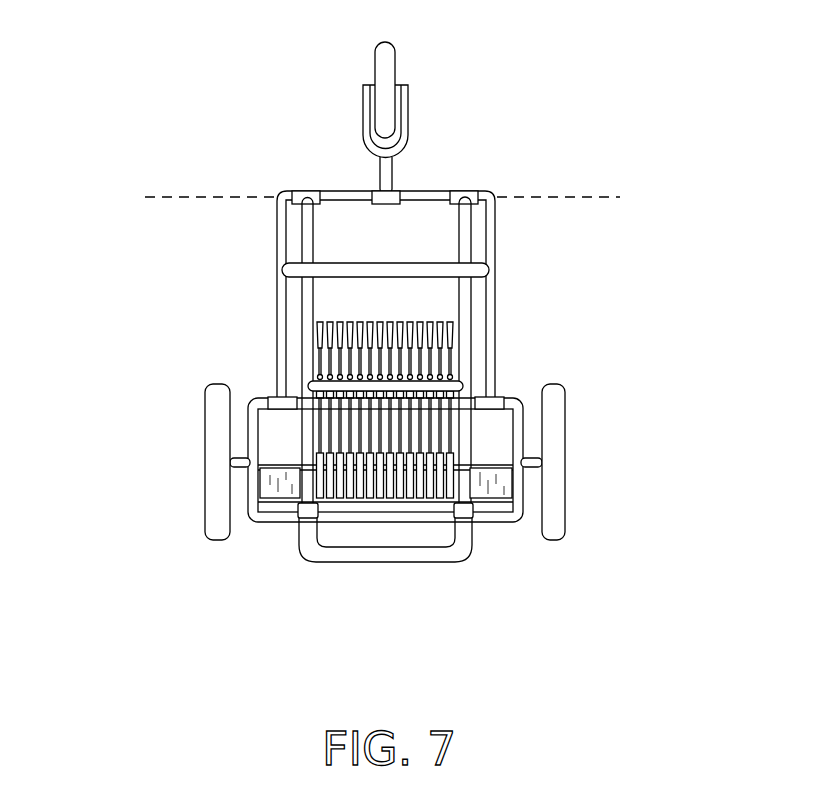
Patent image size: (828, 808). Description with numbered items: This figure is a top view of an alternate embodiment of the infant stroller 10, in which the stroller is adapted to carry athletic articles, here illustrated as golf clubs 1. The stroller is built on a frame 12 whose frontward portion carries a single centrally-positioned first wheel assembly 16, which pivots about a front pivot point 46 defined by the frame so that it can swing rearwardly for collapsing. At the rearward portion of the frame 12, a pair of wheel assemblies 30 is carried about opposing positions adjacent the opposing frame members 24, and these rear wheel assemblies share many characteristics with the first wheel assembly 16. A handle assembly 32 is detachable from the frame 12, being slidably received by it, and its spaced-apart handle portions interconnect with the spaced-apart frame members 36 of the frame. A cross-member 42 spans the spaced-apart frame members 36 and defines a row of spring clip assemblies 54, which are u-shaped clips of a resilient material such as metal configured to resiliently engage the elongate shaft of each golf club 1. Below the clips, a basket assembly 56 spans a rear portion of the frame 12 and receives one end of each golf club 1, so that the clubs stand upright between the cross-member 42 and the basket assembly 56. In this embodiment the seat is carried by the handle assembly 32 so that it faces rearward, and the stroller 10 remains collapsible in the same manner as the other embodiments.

The infant stroller 10 is at (570, 647).
The frame 12 is at (493, 378).
The first wheel assembly 16 is at (385, 52).
The opposing frame members 24 is at (281, 240).
The pair of wheel assemblies 30 is at (565, 438).
The handle assembly 32 is at (303, 557).
The spaced-apart frame members 36 is at (313, 248).
The cross-member 42 is at (317, 383).
The front pivot point 46 is at (220, 197).
The spring clip assemblies 54 is at (452, 374).
The basket assembly 56 is at (485, 503).
The golf club 1 is at (449, 356).